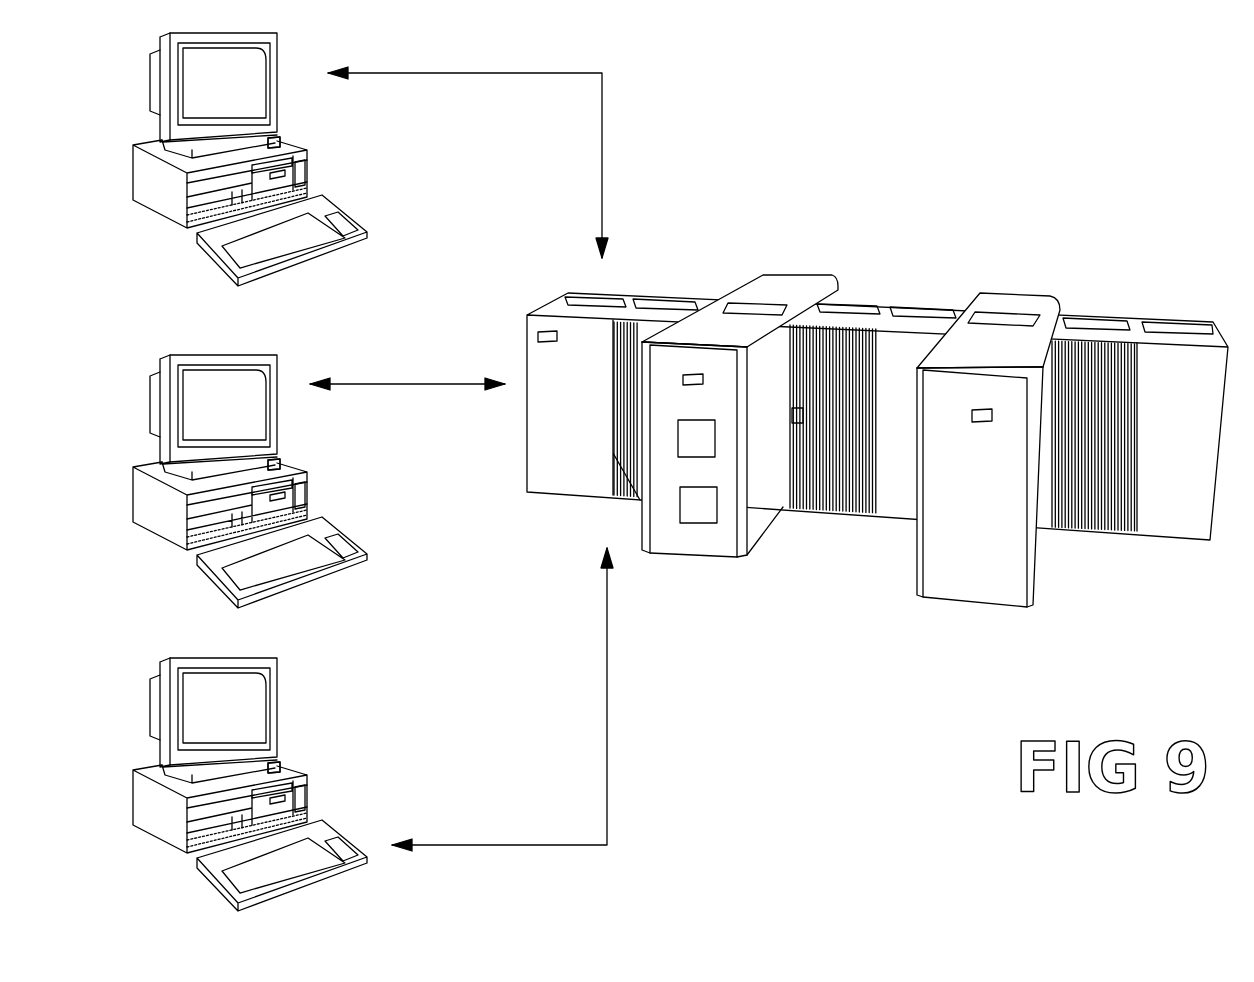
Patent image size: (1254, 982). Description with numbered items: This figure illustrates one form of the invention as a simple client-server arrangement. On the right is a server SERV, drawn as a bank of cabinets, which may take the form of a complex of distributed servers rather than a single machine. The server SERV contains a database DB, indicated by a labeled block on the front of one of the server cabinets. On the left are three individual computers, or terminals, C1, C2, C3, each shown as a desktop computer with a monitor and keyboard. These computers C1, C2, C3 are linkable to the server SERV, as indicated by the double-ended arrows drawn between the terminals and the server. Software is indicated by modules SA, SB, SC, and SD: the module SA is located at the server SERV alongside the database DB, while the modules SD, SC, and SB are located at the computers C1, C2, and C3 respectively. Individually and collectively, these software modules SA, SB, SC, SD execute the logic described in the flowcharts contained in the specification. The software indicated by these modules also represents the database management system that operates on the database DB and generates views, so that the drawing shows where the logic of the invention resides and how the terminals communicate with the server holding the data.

The individual computer C1 is at (250, 159).
The individual computer C2 is at (254, 481).
The individual computer C3 is at (251, 784).
The software module SD is at (268, 137).
The software module SC is at (268, 459).
The software module SB is at (268, 762).
The server SERV is at (877, 487).
The database DB is at (715, 437).
The software module SA is at (698, 525).